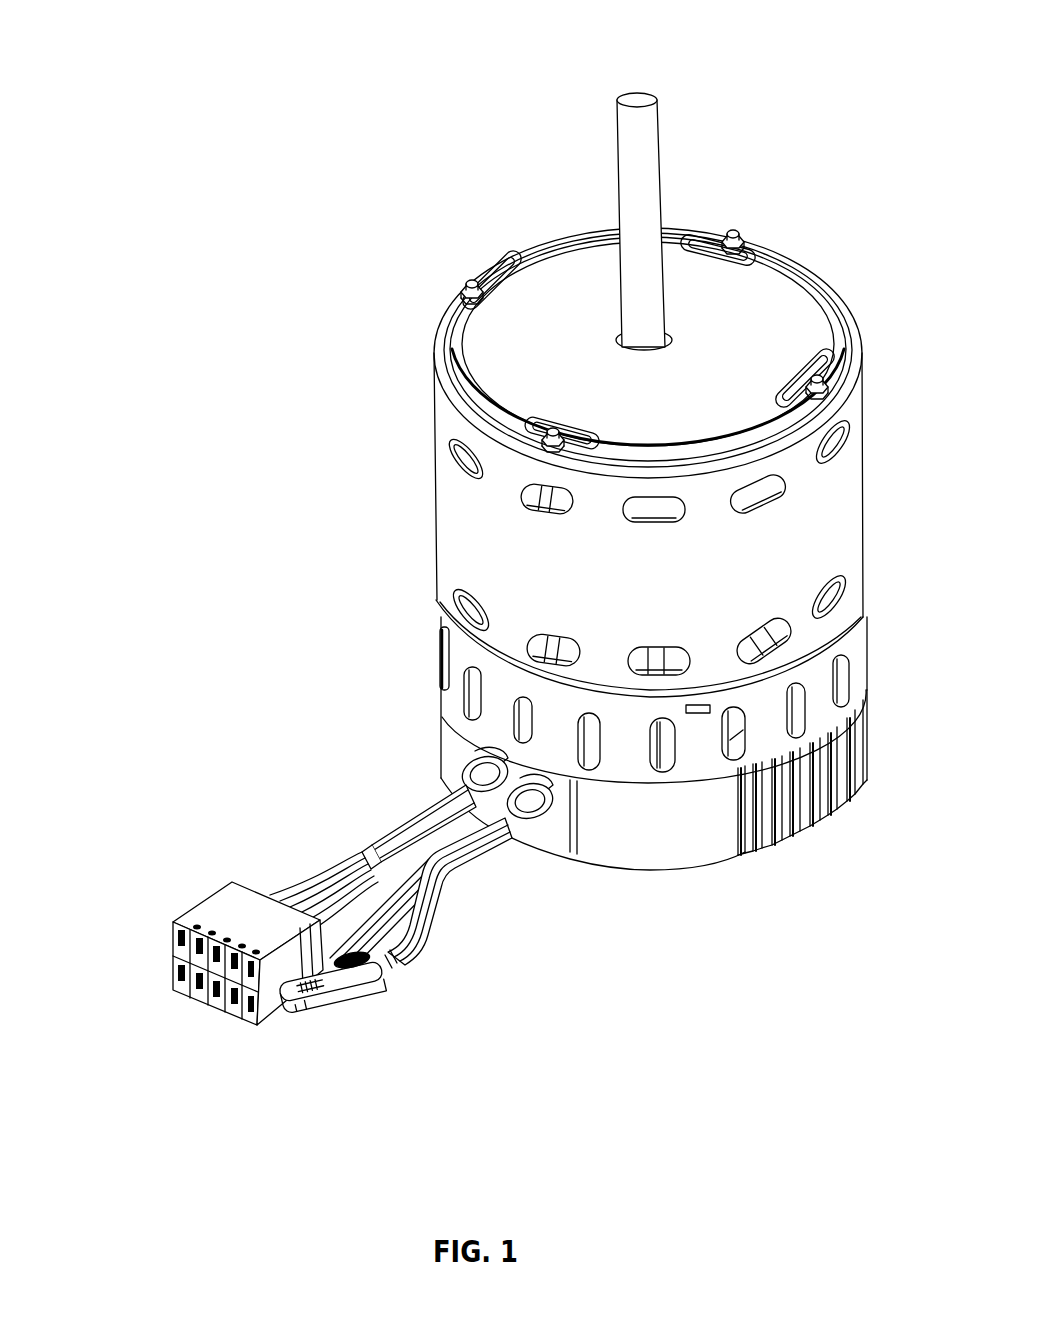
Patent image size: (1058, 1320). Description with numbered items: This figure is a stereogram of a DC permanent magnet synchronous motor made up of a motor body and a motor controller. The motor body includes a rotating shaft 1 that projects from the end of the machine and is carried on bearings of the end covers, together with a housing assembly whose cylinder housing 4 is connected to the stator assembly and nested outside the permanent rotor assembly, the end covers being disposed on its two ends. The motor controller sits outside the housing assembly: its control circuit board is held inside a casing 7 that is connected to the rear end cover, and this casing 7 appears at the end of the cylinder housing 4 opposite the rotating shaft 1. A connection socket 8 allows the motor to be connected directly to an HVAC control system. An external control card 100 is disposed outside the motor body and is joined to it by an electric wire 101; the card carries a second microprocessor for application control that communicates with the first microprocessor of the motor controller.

The rotating shaft 1 is at (652, 168).
The cylinder housing 4 is at (488, 568).
The casing 7 is at (657, 813).
The connection socket 8 is at (235, 918).
The external control card 100 is at (327, 1003).
The electric wire 101 is at (437, 917).